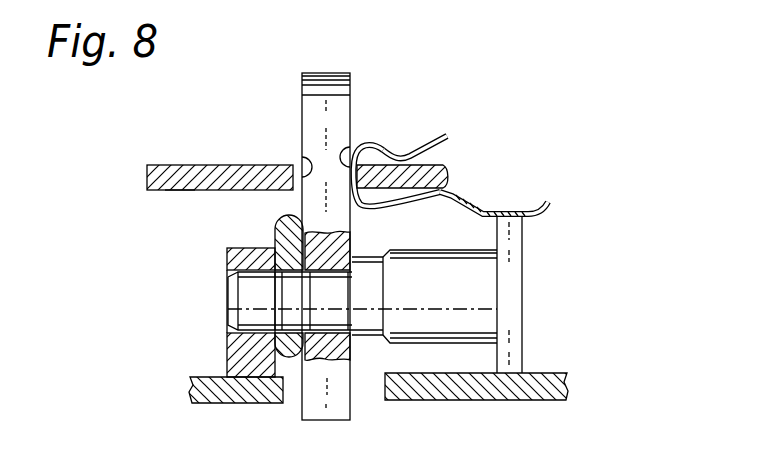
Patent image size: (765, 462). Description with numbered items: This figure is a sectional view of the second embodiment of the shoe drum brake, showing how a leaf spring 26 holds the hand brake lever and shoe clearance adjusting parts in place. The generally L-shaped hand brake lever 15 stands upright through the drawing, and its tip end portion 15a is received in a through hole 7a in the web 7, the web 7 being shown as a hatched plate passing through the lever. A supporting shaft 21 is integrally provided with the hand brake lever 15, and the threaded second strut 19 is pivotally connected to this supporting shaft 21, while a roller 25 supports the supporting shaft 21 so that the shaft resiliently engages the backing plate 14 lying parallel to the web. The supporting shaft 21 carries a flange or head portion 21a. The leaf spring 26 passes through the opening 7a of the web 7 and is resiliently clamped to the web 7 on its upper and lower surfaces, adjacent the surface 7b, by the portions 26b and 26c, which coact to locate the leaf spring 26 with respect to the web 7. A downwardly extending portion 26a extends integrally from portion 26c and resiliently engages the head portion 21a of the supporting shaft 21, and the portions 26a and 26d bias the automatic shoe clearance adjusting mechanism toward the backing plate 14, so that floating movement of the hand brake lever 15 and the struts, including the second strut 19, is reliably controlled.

The web 7 is at (323, 157).
The through hole 7a is at (300, 176).
The surface of the web 7b is at (180, 196).
The backing plate 14 is at (509, 393).
The hand brake lever 15 is at (350, 143).
The tip end portion 15a is at (338, 93).
The second strut 19 is at (275, 232).
The supporting shaft 21 is at (483, 313).
The head portion 21a is at (508, 265).
The roller 25 is at (238, 355).
The leaf spring 26 is at (479, 148).
The downwardly extending portion 26a is at (470, 197).
The clamping portion 26b is at (416, 151).
The clamping portion 26c is at (440, 168).
The biasing portion 26d is at (515, 213).